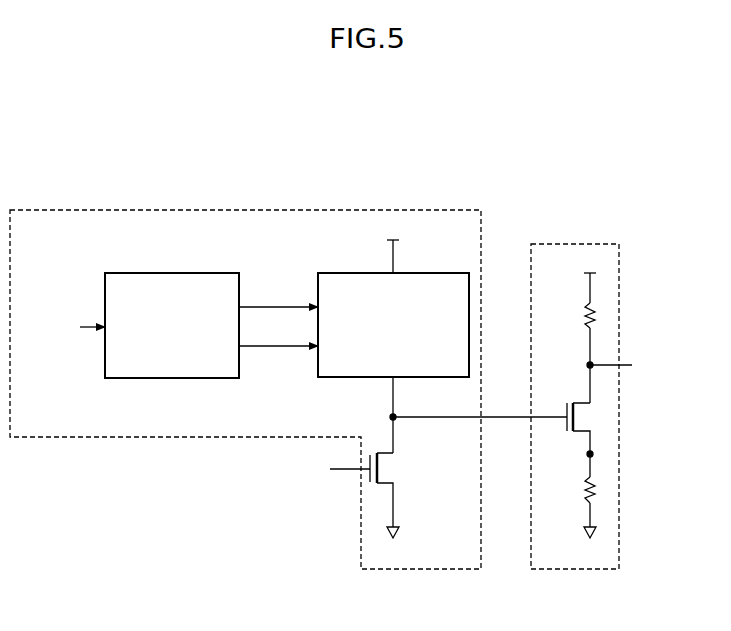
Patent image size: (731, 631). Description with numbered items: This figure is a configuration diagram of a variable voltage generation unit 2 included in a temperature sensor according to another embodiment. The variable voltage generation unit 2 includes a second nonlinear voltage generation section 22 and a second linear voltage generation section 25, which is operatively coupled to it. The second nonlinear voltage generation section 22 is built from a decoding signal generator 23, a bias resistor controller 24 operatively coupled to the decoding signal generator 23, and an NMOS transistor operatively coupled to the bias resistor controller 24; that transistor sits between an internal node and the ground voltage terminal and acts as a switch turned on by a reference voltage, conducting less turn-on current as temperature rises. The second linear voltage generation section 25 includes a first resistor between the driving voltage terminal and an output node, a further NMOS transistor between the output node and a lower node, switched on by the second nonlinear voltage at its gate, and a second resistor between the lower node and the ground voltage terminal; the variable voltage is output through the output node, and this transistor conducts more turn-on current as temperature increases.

The variable voltage generation unit 2 is at (620, 173).
The second nonlinear voltage generation section 22 is at (311, 210).
The decoding signal generator 23 is at (173, 273).
The bias resistor controller 24 is at (457, 273).
The second linear voltage generation section 25 is at (548, 244).